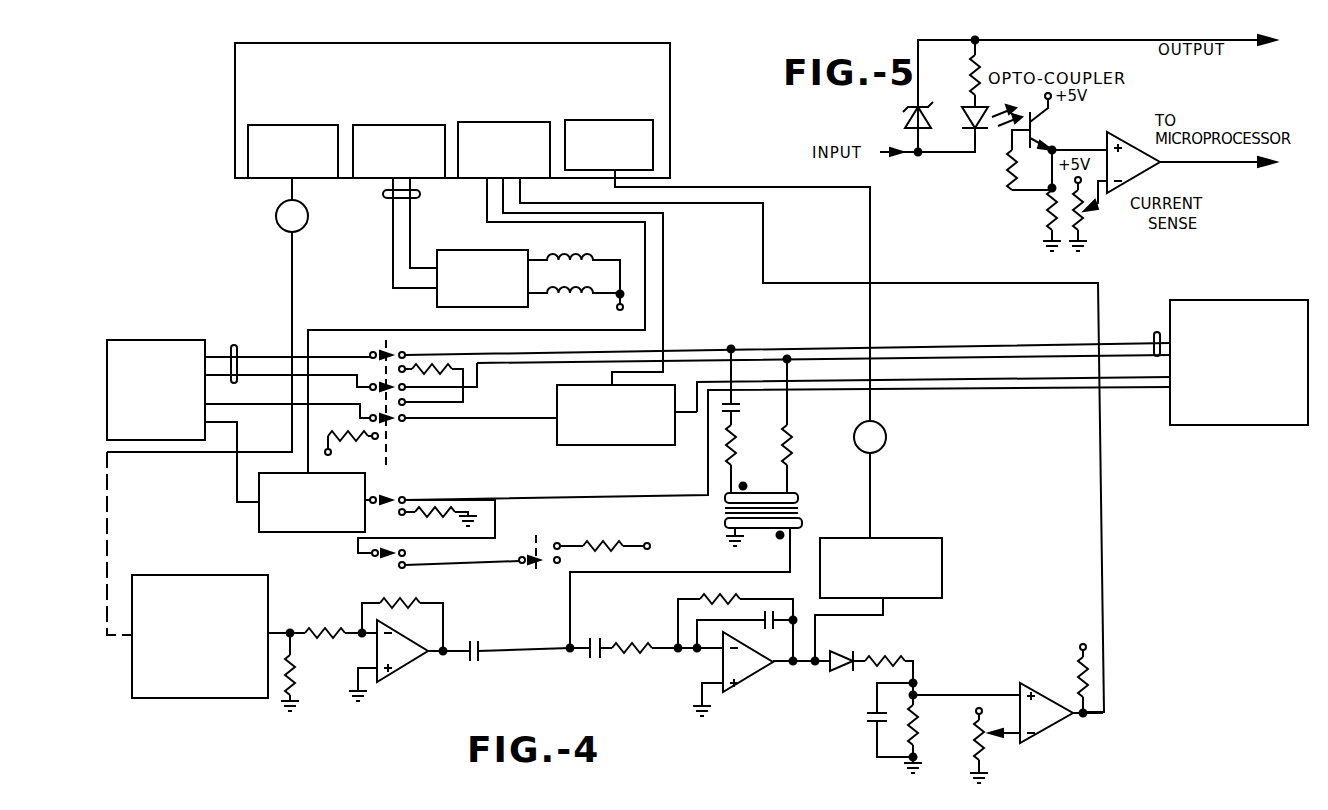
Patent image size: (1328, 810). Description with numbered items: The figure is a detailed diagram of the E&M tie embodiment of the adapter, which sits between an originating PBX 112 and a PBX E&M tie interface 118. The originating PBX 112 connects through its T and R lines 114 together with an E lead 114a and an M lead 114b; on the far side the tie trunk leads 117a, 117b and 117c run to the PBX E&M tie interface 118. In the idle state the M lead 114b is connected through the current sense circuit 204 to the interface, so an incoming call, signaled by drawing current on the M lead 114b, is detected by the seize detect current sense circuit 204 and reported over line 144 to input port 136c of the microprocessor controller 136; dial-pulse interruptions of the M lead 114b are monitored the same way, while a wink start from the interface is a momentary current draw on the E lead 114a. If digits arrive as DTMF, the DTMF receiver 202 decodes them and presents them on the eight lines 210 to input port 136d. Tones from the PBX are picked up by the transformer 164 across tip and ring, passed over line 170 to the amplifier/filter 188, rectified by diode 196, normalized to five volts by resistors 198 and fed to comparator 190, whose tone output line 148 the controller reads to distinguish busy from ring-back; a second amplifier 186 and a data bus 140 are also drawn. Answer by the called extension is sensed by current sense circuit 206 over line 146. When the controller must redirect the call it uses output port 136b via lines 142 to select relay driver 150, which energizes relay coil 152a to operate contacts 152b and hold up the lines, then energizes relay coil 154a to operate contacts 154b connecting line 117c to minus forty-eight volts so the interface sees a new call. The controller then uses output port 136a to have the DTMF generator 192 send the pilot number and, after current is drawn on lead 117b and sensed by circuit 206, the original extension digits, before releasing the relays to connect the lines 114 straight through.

The originating PBX 112 is at (168, 340).
The T and R lines 114 is at (235, 345).
The E lead 114a is at (240, 400).
The M lead 114b is at (240, 438).
The E&M tie trunk line lead 117a is at (1158, 330).
The tie trunk lead 117b is at (1141, 360).
The tie trunk line 117c is at (1138, 398).
The PBX E&M tie interface 118 is at (1262, 300).
The microprocessor controller 136 is at (670, 76).
The output port 136a is at (308, 125).
The output port 136b is at (427, 125).
The input port 136c is at (545, 122).
The input port 136d is at (632, 120).
The data bus to DTMF generator 140 is at (292, 196).
The lines 142 is at (421, 194).
The line 144 is at (361, 333).
The line 146 is at (665, 271).
The tone input line 148 is at (1108, 488).
The relay driver 150 is at (455, 250).
The relay coil 152a is at (560, 260).
The relay contacts 152b is at (388, 349).
The relay coil 154a is at (560, 293).
The relay contacts 154b is at (538, 535).
The transformer 164 is at (806, 502).
The line 170 is at (632, 573).
The output amplifier 186 is at (406, 671).
The amplifier/filter 188 is at (735, 695).
The comparator 190 is at (1057, 692).
The DTMF generator 192 is at (185, 575).
The diode 196 is at (843, 673).
The resistors 198 is at (920, 690).
The DTMF receiver 202 is at (944, 560).
The current sense circuit 204 is at (300, 533).
The current sense circuit 206 is at (608, 448).
The eight lines 210 is at (882, 463).